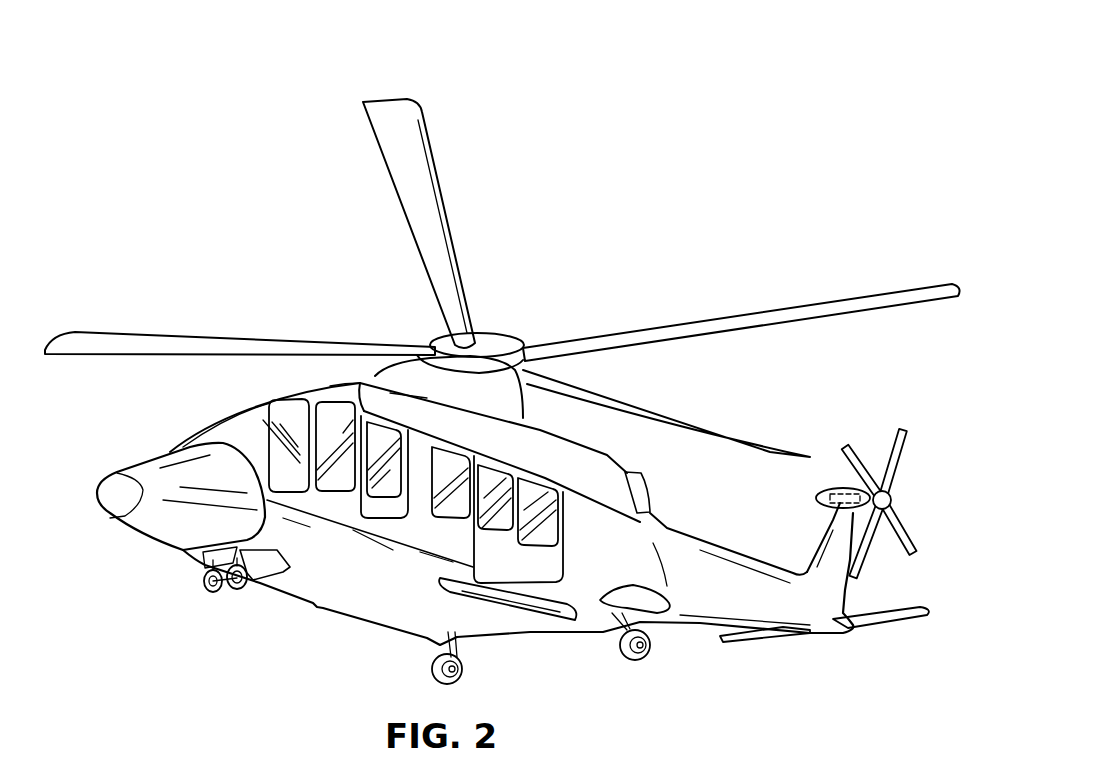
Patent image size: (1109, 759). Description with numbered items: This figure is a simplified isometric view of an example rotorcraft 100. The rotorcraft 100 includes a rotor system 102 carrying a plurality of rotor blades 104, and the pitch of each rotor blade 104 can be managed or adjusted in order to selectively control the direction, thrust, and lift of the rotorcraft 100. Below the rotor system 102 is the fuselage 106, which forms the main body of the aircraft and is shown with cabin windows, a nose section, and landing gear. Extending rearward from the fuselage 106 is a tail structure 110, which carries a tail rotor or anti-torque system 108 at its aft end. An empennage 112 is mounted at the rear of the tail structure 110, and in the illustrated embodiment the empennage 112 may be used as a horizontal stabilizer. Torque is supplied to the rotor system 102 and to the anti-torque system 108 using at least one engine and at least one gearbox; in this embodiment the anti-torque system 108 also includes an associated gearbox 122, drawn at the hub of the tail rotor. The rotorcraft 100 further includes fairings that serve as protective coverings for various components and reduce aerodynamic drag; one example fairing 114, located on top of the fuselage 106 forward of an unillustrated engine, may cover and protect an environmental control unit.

The rotorcraft 100 is at (265, 84).
The rotor system 102 is at (370, 284).
The rotor blade 104 is at (725, 330).
The fuselage 106 is at (307, 588).
The tail rotor or anti-torque system 108 is at (877, 421).
The tail structure 110 is at (805, 645).
The empennage 112 is at (892, 627).
The fairing 114 is at (322, 382).
The gearbox 122 is at (815, 495).